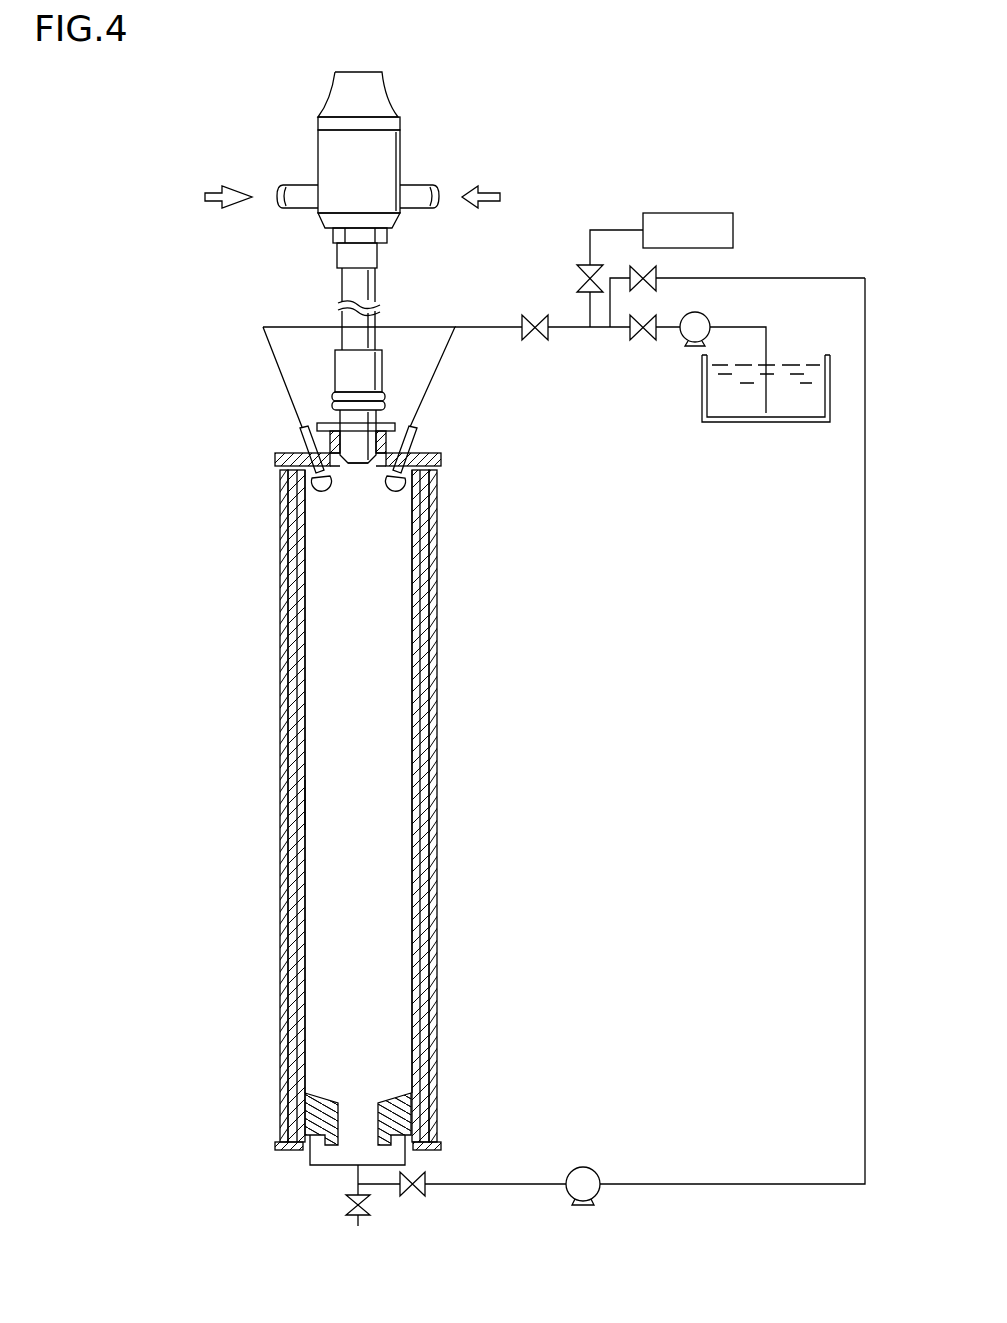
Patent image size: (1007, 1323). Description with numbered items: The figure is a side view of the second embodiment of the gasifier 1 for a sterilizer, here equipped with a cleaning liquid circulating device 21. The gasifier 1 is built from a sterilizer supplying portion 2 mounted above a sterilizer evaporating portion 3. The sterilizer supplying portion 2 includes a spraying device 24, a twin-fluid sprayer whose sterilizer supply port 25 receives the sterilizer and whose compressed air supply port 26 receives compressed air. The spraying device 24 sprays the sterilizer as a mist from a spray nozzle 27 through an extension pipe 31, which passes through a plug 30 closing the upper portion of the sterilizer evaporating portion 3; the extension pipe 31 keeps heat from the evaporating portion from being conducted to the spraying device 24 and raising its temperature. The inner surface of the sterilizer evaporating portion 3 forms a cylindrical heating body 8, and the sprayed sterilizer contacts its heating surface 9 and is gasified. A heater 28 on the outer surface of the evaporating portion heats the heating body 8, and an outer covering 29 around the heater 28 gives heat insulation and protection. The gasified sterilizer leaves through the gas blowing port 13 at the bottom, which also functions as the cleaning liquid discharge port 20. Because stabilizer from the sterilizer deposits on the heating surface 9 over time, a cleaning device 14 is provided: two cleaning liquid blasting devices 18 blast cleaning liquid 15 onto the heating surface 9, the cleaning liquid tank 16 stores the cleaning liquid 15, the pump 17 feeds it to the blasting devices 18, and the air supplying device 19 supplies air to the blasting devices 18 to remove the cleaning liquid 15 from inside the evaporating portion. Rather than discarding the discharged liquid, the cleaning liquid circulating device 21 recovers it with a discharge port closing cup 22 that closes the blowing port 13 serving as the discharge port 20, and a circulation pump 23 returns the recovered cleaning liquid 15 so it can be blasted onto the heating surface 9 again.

The gasifier for a sterilizer 1 is at (88, 447).
The sterilizer supplying portion 2 is at (246, 268).
The sterilizer evaporating portion 3 is at (477, 641).
The heating body 8 is at (420, 716).
The heating surface 9 is at (402, 797).
The gas blowing port 13 is at (405, 1114).
The cleaning liquid discharge port 20 is at (358, 1119).
The cleaning device 14 is at (776, 174).
The cleaning liquid 15 is at (790, 362).
The cleaning liquid tank 16 is at (700, 390).
The pump 17 is at (700, 312).
The cleaning liquid blasting device 18 is at (300, 441).
The air supplying device 19 is at (688, 212).
The cleaning liquid circulating device 21 is at (547, 1158).
The discharge port closing cup 22 is at (408, 1158).
The circulation pump 23 is at (586, 1168).
The spraying device 24 is at (380, 155).
The sterilizer supply port 25 is at (297, 193).
The compressed air supply port 26 is at (418, 190).
The spray nozzle 27 is at (357, 467).
The heater 28 is at (290, 776).
The outer covering 29 is at (282, 630).
The plug 30 is at (402, 430).
The extension pipe 31 is at (384, 376).